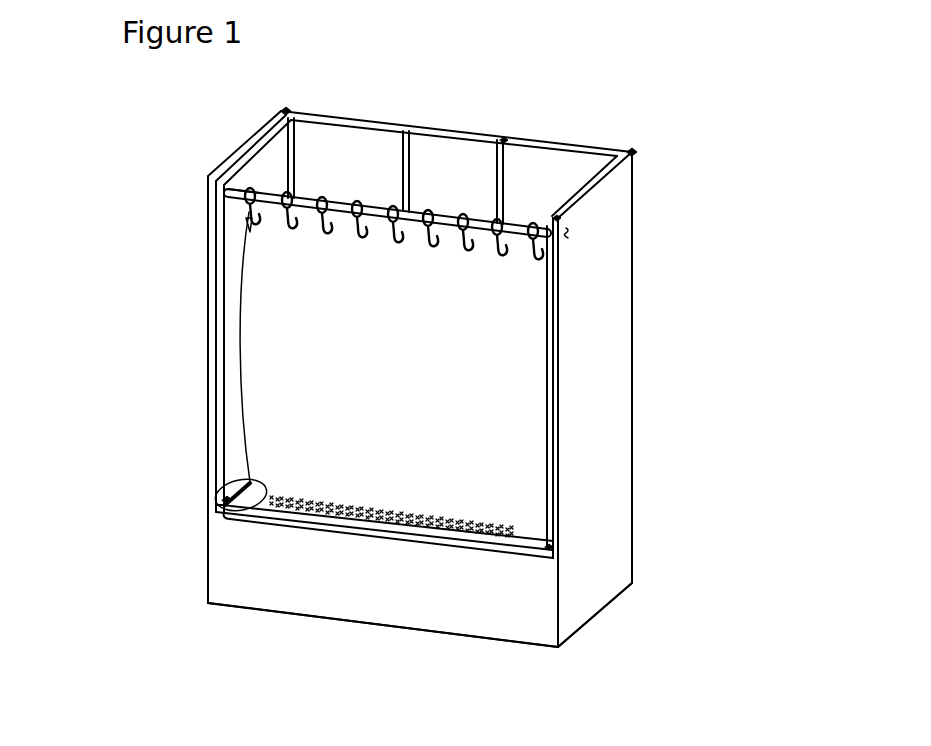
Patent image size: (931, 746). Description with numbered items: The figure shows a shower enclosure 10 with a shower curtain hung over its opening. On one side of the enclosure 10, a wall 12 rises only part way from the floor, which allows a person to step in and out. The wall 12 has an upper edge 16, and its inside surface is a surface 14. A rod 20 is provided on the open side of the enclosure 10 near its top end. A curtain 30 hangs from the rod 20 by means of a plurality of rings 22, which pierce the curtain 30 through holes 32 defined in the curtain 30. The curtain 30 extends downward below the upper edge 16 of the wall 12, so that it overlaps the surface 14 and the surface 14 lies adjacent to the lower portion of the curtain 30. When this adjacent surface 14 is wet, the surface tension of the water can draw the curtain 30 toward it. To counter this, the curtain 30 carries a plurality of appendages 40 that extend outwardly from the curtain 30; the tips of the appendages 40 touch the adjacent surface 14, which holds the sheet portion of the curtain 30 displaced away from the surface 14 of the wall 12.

The shower enclosure 10 is at (610, 237).
The wall 12 is at (263, 575).
The surface 14 is at (238, 482).
The upper edge 16 is at (528, 540).
The rod 20 is at (337, 207).
The rings 22 is at (473, 213).
The curtain 30 is at (405, 353).
The holes 32 is at (250, 214).
The appendages 40 is at (462, 543).